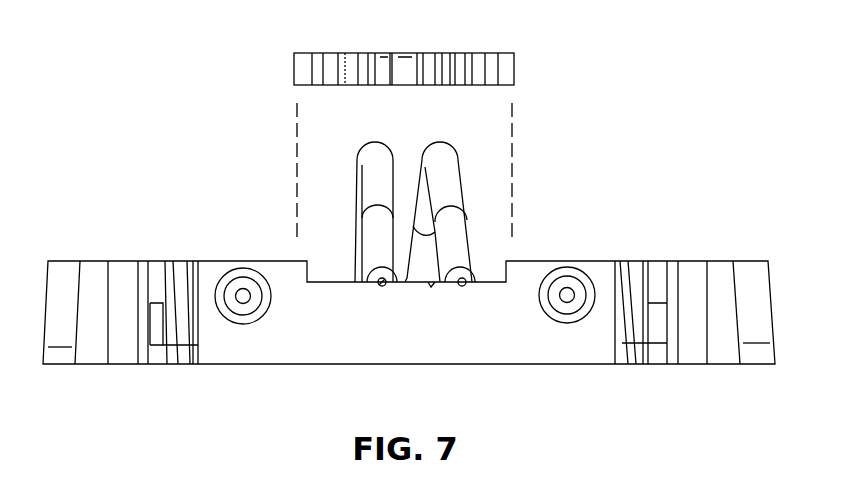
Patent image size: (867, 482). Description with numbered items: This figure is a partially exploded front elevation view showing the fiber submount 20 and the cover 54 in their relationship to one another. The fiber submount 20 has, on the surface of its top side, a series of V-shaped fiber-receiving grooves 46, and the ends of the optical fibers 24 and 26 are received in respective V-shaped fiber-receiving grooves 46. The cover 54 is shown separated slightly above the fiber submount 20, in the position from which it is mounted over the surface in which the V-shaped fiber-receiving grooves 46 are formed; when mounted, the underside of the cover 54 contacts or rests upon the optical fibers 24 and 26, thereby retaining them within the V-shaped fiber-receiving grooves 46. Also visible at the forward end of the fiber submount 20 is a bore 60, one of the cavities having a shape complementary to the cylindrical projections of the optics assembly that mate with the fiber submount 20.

The fiber submount 20 is at (742, 208).
The optical fiber 24 is at (468, 283).
The optical fiber 26 is at (383, 285).
The V-shaped fiber-receiving groove 46 is at (348, 283).
The cover 54 is at (463, 53).
The bore 60 is at (246, 270).